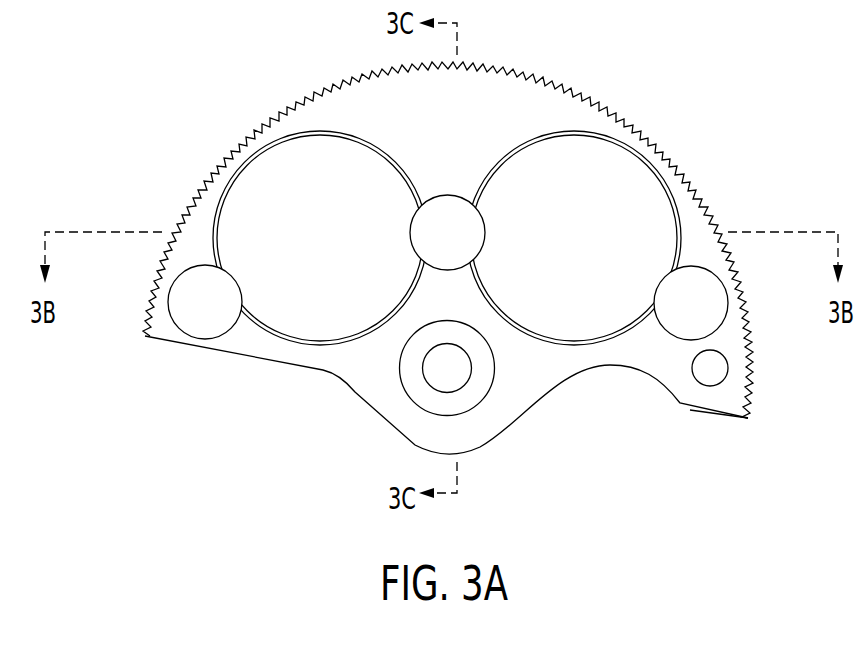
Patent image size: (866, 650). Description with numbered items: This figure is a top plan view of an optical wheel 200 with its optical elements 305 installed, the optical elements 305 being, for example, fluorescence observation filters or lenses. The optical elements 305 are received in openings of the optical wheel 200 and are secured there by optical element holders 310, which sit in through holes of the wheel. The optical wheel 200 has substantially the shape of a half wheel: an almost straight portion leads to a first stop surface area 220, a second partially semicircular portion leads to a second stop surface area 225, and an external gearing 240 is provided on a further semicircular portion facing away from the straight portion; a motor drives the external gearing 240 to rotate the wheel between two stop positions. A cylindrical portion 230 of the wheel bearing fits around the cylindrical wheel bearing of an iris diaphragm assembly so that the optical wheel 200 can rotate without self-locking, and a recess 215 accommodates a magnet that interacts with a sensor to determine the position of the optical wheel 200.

The optical wheel 200 is at (140, 168).
The external gearing 240 is at (597, 104).
The first stop surface area 220 is at (149, 341).
The optical elements 305 is at (272, 163).
The optical element holders 310 is at (448, 208).
The cylindrical portion 230 is at (440, 378).
The recess 215 is at (700, 376).
The second stop surface area 225 is at (729, 418).